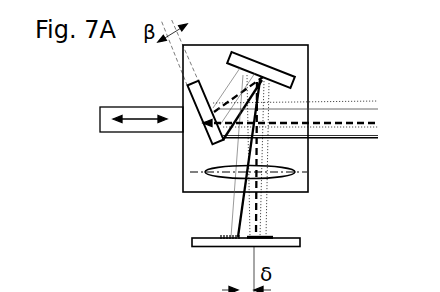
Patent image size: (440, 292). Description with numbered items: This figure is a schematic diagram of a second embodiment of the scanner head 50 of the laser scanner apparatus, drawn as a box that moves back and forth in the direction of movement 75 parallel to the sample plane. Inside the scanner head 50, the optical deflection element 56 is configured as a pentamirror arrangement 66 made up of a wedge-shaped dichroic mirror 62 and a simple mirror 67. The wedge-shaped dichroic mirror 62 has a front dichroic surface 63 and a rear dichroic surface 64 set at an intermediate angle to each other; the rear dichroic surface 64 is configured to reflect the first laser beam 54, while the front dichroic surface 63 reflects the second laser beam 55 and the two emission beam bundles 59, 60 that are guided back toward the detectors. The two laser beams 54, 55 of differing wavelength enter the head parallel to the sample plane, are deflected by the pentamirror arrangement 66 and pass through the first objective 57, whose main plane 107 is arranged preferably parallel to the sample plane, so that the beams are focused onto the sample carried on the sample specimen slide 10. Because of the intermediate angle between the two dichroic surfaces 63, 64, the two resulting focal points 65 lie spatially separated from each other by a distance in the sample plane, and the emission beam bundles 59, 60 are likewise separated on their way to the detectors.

The sample specimen slide 10 is at (299, 246).
The scanner head 50 is at (212, 66).
The first laser beam 54 is at (350, 121).
The second laser beam 55 is at (372, 168).
The optical deflection element 56 is at (190, 98).
The first objective 57 is at (209, 189).
The emission beam bundle 59 is at (333, 100).
The emission beam bundle 60 is at (237, 196).
The wedge-shaped dichroic mirror 62 is at (206, 139).
The front dichroic surface 63 is at (208, 90).
The rear dichroic surface 64 is at (200, 132).
The focal point 65 is at (246, 252).
The pentamirror arrangement 66 is at (360, 223).
The simple mirror 67 is at (281, 77).
The direction of movement 75 is at (141, 131).
The main plane 107 is at (298, 172).